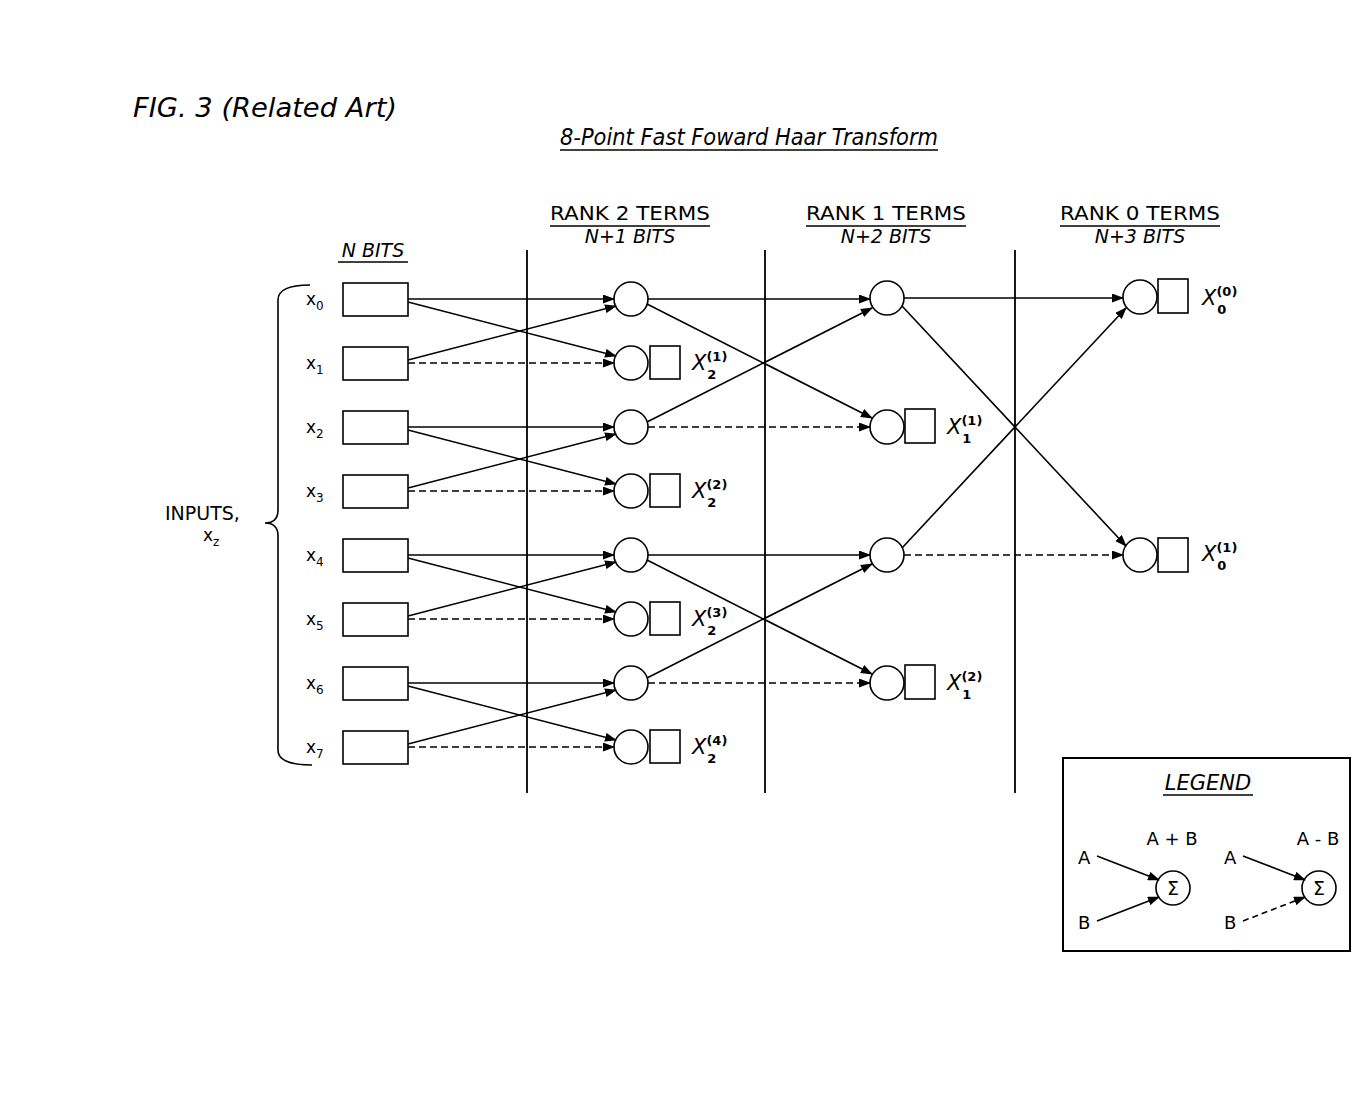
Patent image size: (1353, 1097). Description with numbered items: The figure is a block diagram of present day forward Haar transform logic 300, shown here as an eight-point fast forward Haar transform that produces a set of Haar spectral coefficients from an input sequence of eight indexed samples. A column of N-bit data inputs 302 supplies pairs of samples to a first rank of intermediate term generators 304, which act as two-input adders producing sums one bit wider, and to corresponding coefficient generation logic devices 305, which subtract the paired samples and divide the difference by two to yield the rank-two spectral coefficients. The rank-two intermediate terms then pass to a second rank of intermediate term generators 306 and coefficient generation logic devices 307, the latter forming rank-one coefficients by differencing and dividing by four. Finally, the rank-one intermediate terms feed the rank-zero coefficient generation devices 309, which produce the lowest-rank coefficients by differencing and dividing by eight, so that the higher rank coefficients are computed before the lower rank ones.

The forward Haar transform logic 300 is at (1268, 150).
The data inputs 302 is at (408, 290).
The RANK 2 intermediate term generators 304 is at (633, 283).
The RANK 2 coefficient generation logic devices 305 is at (633, 347).
The RANK 1 intermediate term generators 306 is at (897, 283).
The RANK 1 coefficient generation logic devices 307 is at (892, 411).
The RANK 0 coefficient generation devices 309 is at (1144, 281).